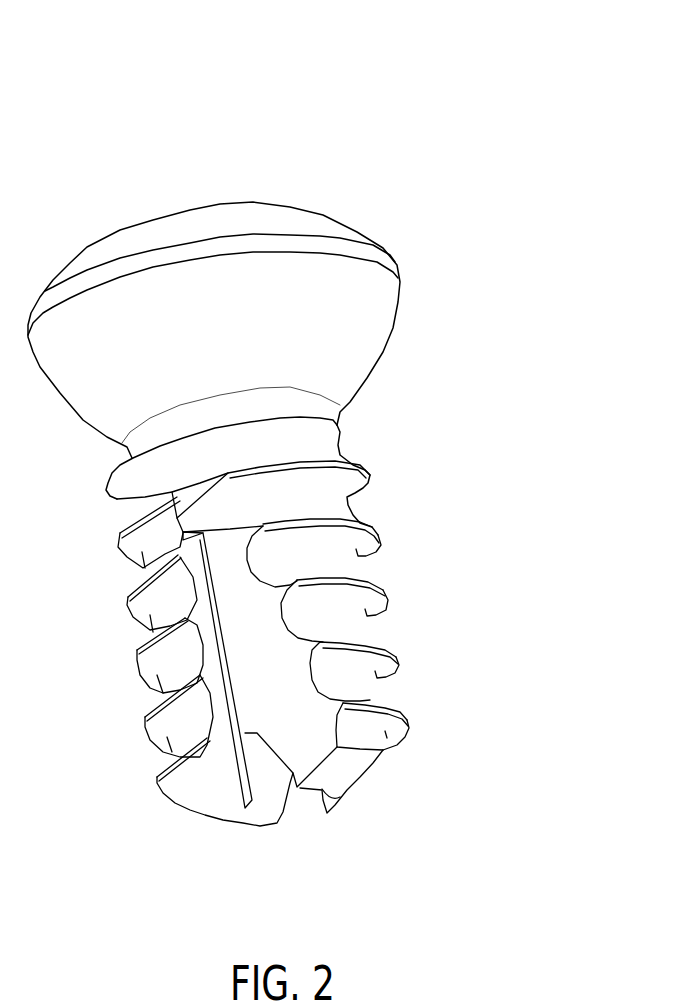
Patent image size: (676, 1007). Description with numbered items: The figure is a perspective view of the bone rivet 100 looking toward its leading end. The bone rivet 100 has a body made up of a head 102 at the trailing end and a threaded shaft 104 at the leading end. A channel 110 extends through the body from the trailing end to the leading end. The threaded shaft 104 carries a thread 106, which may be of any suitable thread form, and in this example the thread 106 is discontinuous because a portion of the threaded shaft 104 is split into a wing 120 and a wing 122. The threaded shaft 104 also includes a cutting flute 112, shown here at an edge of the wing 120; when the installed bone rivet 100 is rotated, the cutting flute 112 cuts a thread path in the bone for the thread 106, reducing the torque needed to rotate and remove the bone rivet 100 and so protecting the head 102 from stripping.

The bone rivet 100 is at (387, 102).
The head 102 is at (380, 323).
The threaded shaft 104 is at (475, 570).
The thread 106 is at (137, 673).
The channel 110 is at (310, 824).
The cutting flute 112 is at (235, 745).
The wing 120 is at (183, 805).
The wing 122 is at (377, 782).